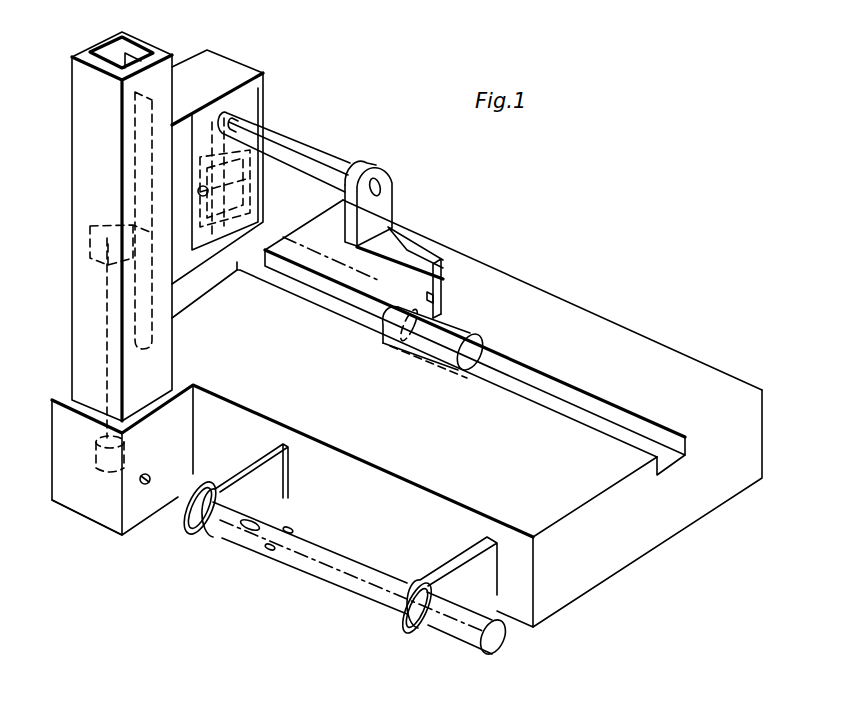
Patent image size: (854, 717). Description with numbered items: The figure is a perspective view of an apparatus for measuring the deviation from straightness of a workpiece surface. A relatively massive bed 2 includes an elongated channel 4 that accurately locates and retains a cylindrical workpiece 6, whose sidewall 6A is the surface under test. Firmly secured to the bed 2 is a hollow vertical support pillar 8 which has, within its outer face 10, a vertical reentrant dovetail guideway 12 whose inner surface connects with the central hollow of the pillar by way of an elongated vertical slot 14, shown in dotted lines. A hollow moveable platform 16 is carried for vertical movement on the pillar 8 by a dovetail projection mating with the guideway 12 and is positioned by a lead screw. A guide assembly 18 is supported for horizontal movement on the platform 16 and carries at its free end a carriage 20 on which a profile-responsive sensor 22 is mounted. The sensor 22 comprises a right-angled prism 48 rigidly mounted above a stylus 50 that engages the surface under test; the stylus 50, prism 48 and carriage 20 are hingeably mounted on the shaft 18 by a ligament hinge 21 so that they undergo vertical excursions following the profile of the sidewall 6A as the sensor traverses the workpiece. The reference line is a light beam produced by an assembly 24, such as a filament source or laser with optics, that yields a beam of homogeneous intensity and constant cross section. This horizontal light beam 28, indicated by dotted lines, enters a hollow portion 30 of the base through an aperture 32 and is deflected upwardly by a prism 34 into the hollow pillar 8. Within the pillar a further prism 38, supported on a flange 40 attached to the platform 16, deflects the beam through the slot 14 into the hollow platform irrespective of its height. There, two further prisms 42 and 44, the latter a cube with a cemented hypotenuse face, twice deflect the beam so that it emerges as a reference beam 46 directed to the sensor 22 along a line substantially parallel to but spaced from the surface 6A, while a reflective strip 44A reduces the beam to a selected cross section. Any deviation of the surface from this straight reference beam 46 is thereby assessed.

The bed 2 is at (660, 353).
The elongated channel 4 is at (676, 458).
The workpiece 6 is at (467, 362).
The sidewall 6A is at (485, 343).
The hollow vertical support pillar 8 is at (93, 104).
The outer face 10 is at (126, 28).
The vertical reentrant dovetail guideway 12 is at (142, 42).
The elongated vertical slot 14 is at (147, 153).
The hollow moveable platform 16 is at (263, 88).
The guide assembly 18 is at (327, 168).
The carriage 20 is at (410, 248).
The ligament hinge 21 is at (390, 223).
The profile-responsive sensor 22 is at (447, 258).
The assembly 24 is at (457, 632).
The light beam 28 is at (174, 496).
The hollow portion 30 is at (108, 517).
The aperture 32 is at (148, 486).
The prism 34 is at (103, 482).
The further prism 38 is at (150, 231).
The flange 40 is at (108, 262).
The prism 42 is at (206, 128).
The prism 44 is at (210, 205).
The reflective strip 44A is at (222, 207).
The reference beam 46 is at (350, 293).
The right-angled prism 48 is at (452, 258).
The stylus 50 is at (447, 318).